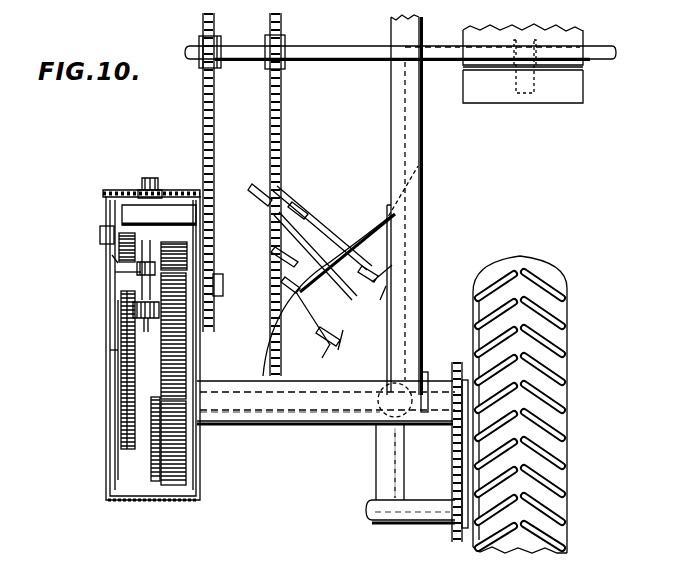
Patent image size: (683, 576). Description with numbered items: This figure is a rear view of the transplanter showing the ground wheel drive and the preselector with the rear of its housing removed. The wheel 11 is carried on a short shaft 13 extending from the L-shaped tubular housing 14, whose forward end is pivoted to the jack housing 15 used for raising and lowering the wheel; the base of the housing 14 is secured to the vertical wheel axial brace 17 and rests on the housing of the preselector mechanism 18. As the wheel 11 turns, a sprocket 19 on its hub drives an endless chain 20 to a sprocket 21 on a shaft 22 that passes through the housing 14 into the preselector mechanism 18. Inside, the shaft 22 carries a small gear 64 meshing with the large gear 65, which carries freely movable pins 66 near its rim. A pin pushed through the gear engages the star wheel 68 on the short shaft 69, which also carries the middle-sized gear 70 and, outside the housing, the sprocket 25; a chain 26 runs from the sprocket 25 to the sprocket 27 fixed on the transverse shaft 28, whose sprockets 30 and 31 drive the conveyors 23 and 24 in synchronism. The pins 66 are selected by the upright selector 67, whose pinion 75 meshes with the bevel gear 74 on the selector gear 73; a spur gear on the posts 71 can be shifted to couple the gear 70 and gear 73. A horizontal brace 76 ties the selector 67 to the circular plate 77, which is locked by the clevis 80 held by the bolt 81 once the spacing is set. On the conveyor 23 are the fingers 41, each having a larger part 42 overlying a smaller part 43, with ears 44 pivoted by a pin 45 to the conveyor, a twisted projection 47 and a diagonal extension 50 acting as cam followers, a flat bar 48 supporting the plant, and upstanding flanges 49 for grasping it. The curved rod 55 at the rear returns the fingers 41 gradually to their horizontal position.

The wheel 11 is at (567, 321).
The short shaft 13 is at (406, 524).
The L-shaped tubular housing 14 is at (356, 424).
The jack housing 15 is at (382, 216).
The vertical wheel axial brace 17 is at (410, 262).
The preselector mechanism 18 is at (197, 343).
The sprocket 19 is at (452, 530).
The endless chain 20 is at (452, 455).
The sprocket 21 is at (466, 380).
The shaft 22 is at (314, 418).
The conveyor 23 is at (286, 70).
The conveyor 24 is at (494, 63).
The sprocket 25 is at (210, 320).
The chain 26 is at (214, 160).
The sprocket 27 is at (214, 26).
The transverse shaft 28 is at (333, 50).
The sprocket 30 is at (266, 58).
The second sprocket 31 is at (519, 78).
The finger 41 is at (276, 240).
The larger part 42 is at (304, 352).
The smaller part 43 is at (342, 254).
The ears 44 is at (276, 270).
The pin 45 is at (280, 194).
The projection 47 is at (262, 200).
The flat bar 48 is at (360, 306).
The upstanding flange 49 is at (334, 352).
The diagonal extension 50 is at (308, 213).
The curved rod 55 is at (265, 337).
The small gear 64 is at (186, 450).
The large gear 65 is at (186, 370).
The pins 66 is at (156, 462).
The upright selector 67 is at (147, 258).
The star wheel 68 is at (183, 248).
The short shaft 69 is at (224, 288).
The middle-sized gear 70 is at (118, 248).
The posts 71 is at (172, 210).
The selector gear 73 is at (114, 346).
The bevel gear 74 is at (120, 420).
The pinion 75 is at (148, 318).
The horizontal brace 76 is at (122, 278).
The circular plate 77 is at (119, 328).
The clevis 80 is at (116, 258).
The bolt 81 is at (100, 236).